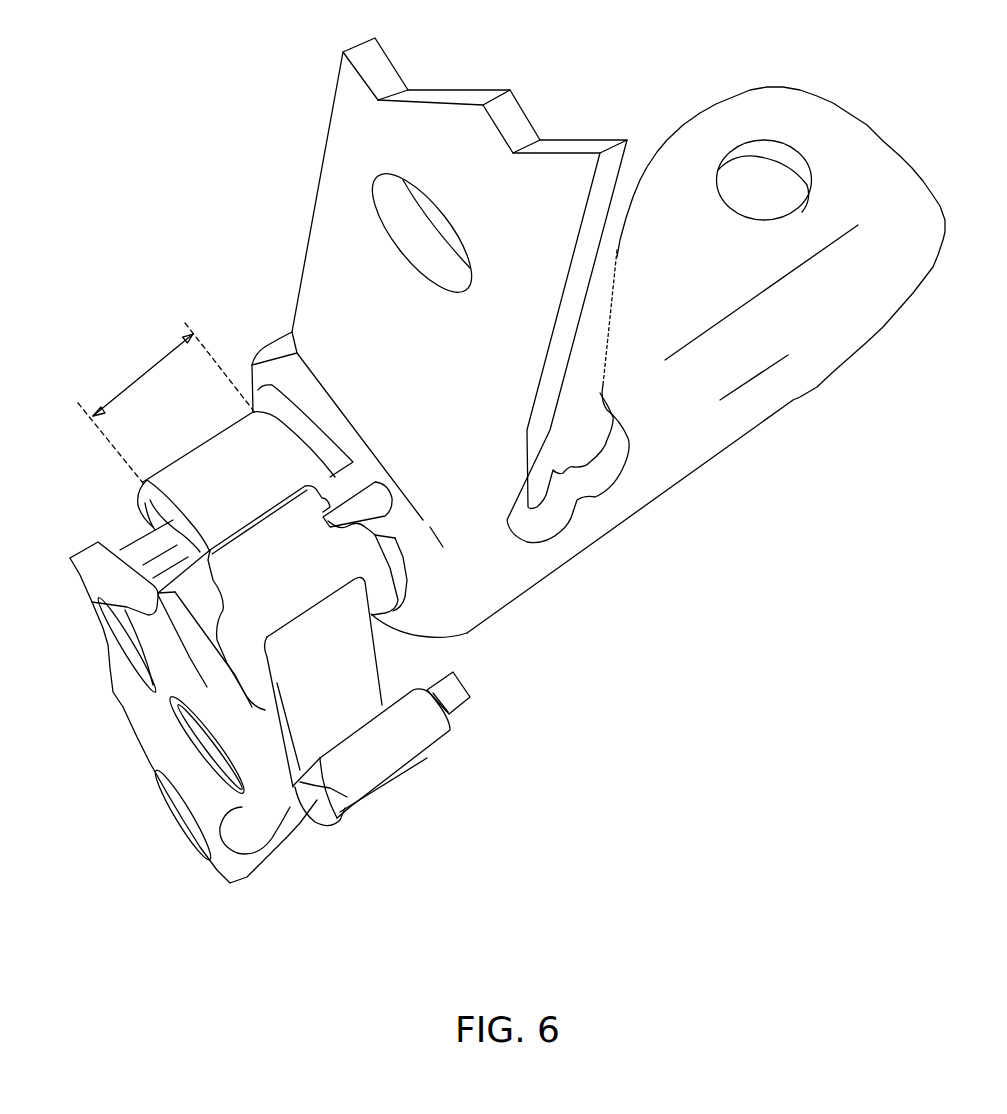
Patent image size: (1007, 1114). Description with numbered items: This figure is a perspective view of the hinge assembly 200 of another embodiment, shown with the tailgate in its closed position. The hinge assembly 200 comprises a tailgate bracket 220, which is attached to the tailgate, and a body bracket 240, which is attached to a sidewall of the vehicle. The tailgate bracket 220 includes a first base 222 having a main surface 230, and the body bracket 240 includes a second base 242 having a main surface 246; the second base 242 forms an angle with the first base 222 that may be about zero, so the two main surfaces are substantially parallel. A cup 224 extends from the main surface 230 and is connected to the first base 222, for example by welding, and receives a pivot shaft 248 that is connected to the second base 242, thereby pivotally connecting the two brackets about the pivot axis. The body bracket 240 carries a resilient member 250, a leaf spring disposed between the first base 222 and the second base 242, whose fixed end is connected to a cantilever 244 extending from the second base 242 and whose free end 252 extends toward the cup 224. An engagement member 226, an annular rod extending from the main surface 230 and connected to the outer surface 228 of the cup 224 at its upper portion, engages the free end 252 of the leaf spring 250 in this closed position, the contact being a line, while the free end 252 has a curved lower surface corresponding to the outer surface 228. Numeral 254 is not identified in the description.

The hinge assembly 200 is at (230, 92).
The tailgate bracket 220 is at (576, 147).
The first base 222 is at (276, 333).
The cup 224 is at (140, 481).
The engagement member 226 is at (380, 507).
The outer surface of the cup 228 is at (215, 447).
The main surface of the first base 230 is at (263, 366).
The body bracket 240 is at (138, 723).
The second base 242 is at (297, 830).
The cantilever 244 is at (470, 687).
The main surface of the second base 246 is at (167, 763).
The pivot shaft 248 is at (130, 547).
The resilient member 250 is at (368, 698).
The free end 252 is at (277, 537).
The pin 254 is at (383, 752).